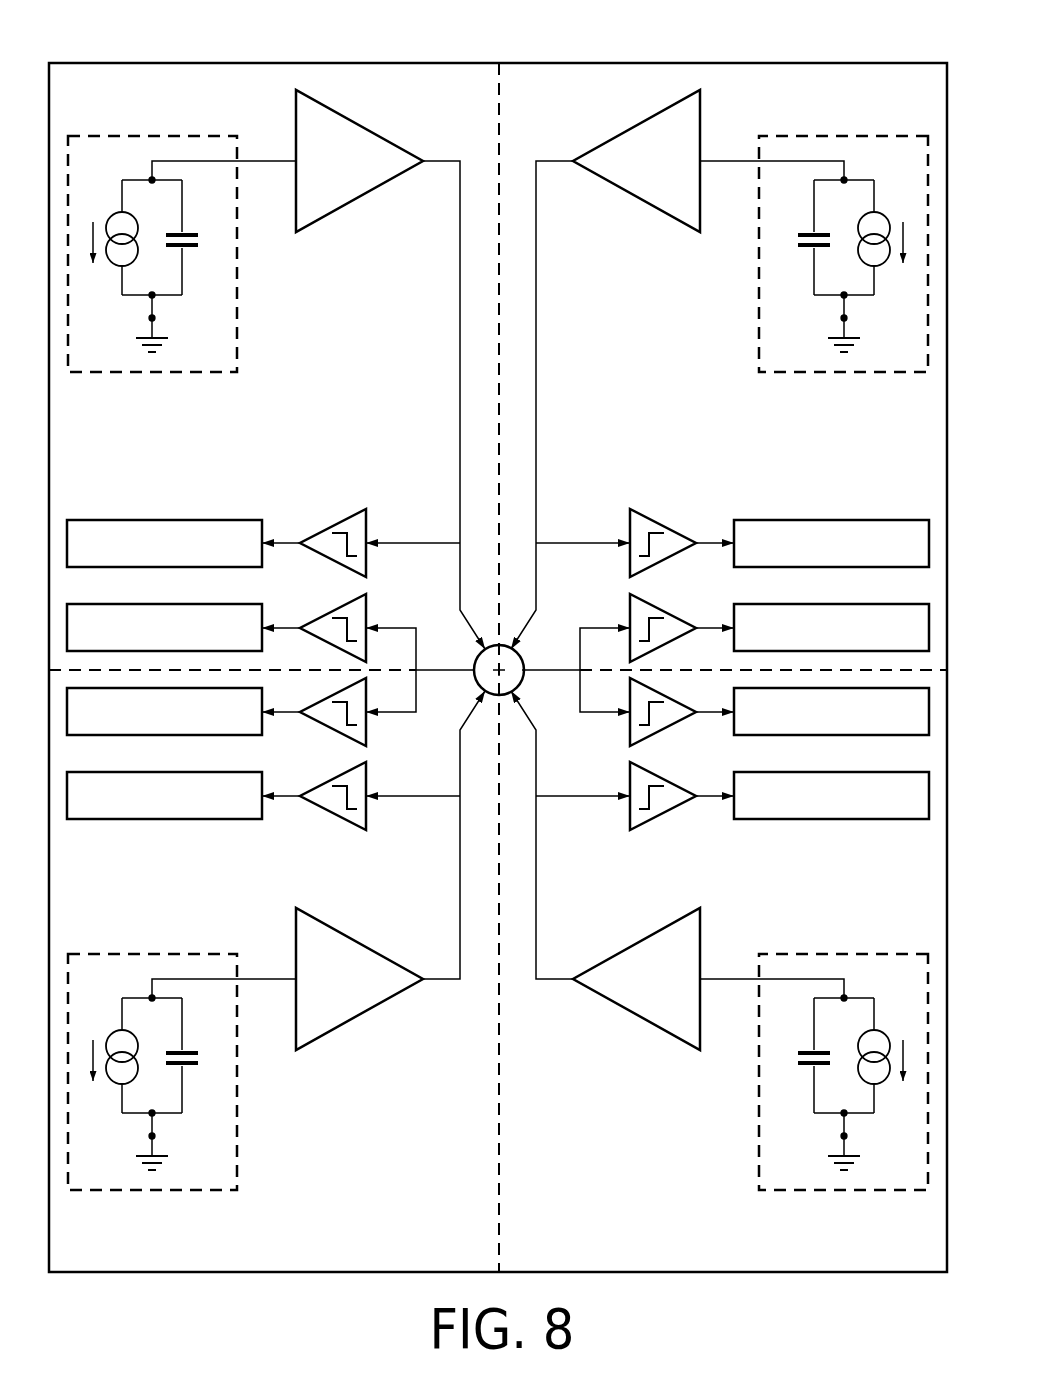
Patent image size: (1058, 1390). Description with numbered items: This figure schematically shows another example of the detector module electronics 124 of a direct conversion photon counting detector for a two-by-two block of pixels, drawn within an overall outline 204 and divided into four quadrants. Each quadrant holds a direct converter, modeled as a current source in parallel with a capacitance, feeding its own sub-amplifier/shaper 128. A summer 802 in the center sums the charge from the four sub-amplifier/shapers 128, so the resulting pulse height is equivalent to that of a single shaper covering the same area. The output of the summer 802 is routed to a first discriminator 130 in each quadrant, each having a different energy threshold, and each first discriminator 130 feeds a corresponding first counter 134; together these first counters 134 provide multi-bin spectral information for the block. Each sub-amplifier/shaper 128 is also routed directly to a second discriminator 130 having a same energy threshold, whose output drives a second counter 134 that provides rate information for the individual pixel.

The detector pixel 204 is at (683, 63).
The detector module electronics 124 is at (237, 322).
The sub-amplifier/shaper 128 is at (313, 223).
The discriminator 130 is at (366, 520).
The counter 134 is at (213, 520).
The summer 802 is at (487, 695).